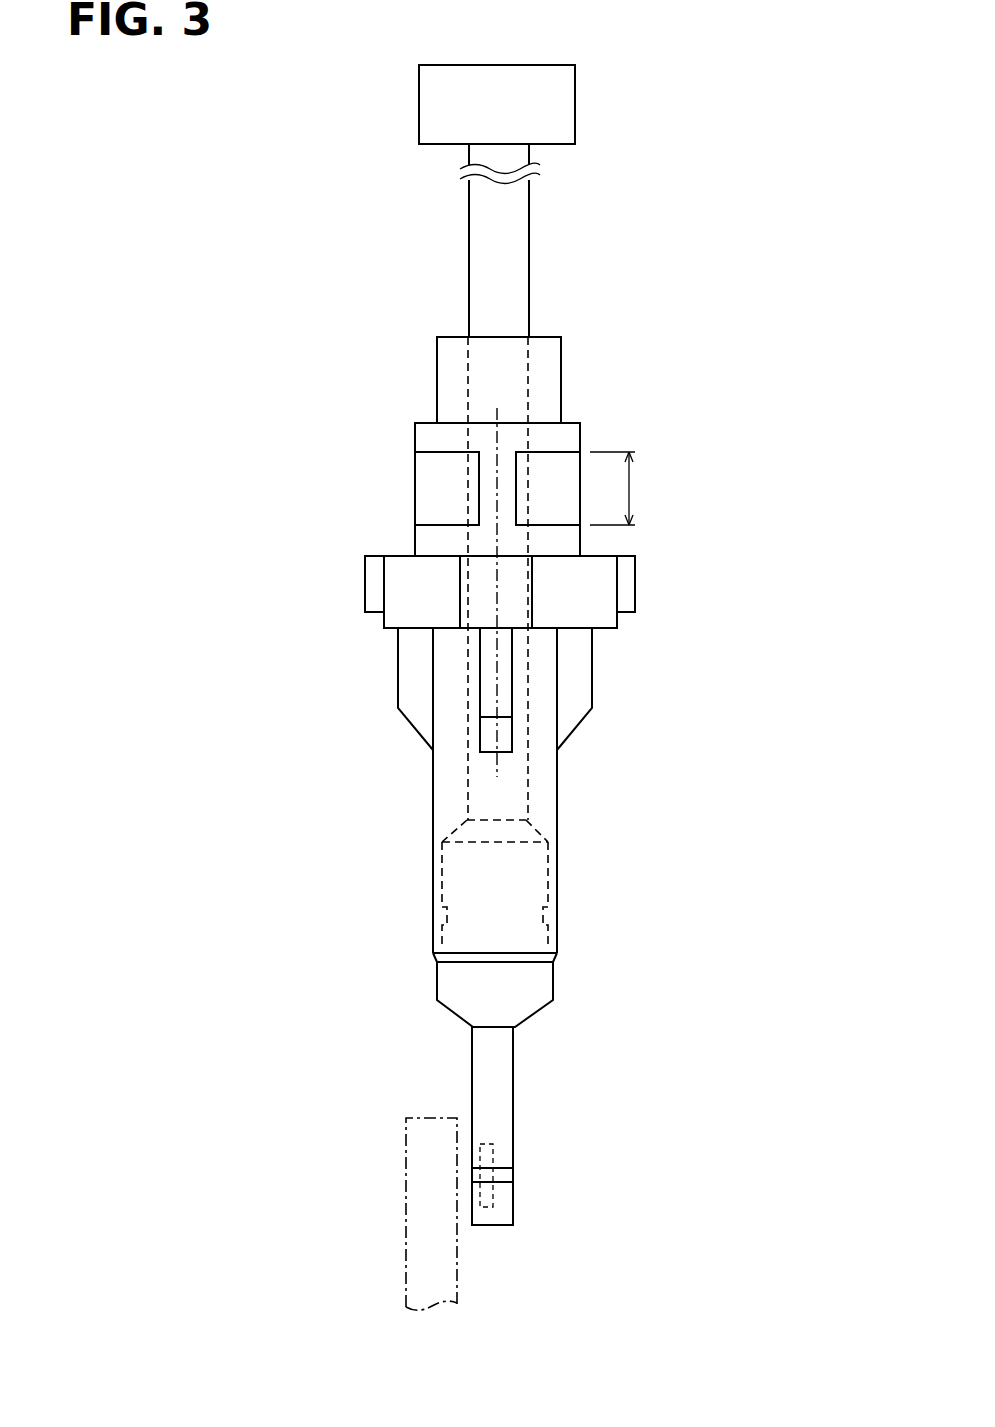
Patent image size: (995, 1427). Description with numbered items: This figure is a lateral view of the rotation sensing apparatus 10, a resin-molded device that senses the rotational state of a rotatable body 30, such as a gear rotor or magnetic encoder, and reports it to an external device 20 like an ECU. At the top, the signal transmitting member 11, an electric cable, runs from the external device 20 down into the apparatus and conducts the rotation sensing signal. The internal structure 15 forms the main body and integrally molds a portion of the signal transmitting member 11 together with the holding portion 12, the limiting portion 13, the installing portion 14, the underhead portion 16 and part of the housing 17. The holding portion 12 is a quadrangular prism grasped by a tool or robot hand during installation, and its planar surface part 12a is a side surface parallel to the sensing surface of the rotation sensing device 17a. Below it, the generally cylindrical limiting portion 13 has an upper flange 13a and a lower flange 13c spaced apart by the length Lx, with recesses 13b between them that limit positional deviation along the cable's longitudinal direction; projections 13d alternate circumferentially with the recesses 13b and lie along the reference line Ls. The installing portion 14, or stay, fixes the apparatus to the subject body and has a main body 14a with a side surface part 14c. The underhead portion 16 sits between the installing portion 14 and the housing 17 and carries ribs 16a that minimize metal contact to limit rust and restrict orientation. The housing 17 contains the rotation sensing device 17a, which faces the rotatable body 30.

The rotation sensing apparatus 10 is at (323, 188).
The signal transmitting member 11 is at (483, 283).
The holding portion 12 is at (327, 337).
The planar surface part 12a is at (522, 368).
The limiting portion 13 is at (327, 423).
The flange 13a is at (437, 440).
The recess 13b is at (445, 453).
The flange 13c is at (437, 543).
The projection 13d is at (503, 475).
The installing portion 14 is at (327, 556).
The main body 14a is at (590, 587).
The side surface part 14c is at (498, 610).
The internal structure 15 is at (272, 337).
The underhead portion 16 is at (325, 628).
The rib 16a is at (580, 697).
The housing 17 is at (367, 823).
The rotation sensing device 17a is at (493, 1160).
The external device 20 is at (575, 110).
The rotatable body 30 is at (405, 1188).